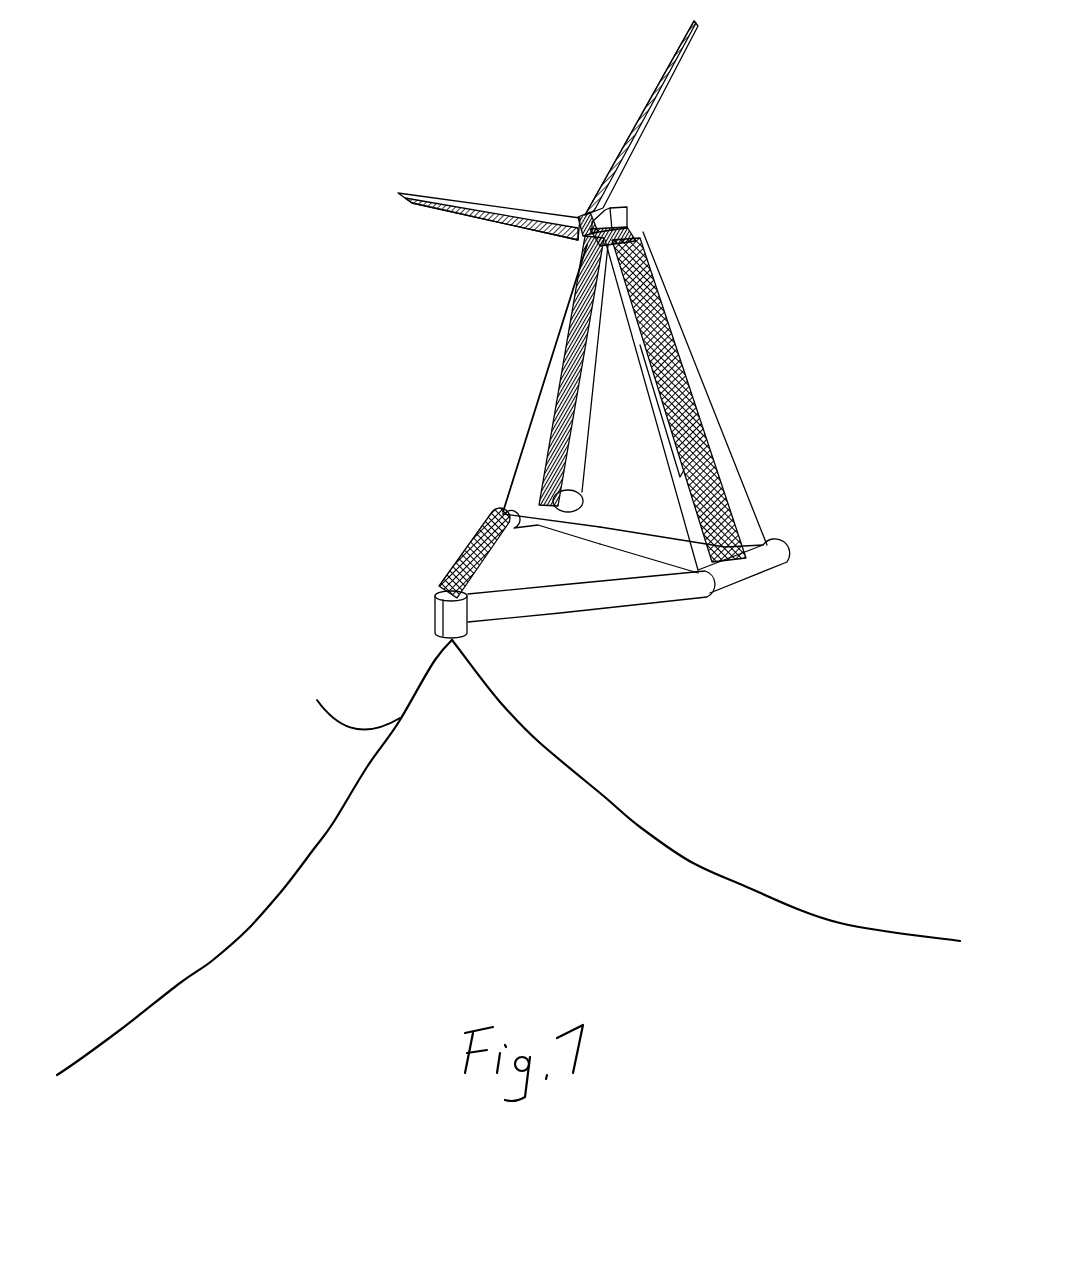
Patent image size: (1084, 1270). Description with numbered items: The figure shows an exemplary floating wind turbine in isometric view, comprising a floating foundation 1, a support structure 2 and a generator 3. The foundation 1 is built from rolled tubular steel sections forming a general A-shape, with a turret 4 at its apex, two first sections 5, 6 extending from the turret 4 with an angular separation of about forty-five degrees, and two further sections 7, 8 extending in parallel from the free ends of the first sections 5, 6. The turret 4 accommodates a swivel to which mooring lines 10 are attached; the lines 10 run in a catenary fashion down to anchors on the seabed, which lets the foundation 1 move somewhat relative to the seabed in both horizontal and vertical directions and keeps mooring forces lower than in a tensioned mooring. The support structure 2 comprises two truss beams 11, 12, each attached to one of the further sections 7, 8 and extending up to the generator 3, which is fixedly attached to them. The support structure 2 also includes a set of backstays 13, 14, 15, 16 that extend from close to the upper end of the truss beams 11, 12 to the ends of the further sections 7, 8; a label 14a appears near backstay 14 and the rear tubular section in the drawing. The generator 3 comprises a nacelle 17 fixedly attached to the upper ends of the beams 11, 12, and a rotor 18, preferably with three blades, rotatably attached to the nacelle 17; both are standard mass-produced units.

The floating foundation 1 is at (595, 579).
The support structure 2 is at (707, 401).
The generator 3 is at (626, 206).
The turret 4 is at (436, 592).
The first section 5 is at (473, 532).
The first section 6 is at (570, 607).
The further section 7 is at (527, 523).
The further section 8 is at (755, 577).
The mooring lines 10 is at (340, 713).
The truss beam 11 is at (662, 335).
The truss beam 12 is at (578, 422).
The backstay 13 is at (523, 443).
The backstay 14 is at (583, 473).
The beam 14a is at (619, 522).
The backstay 15 is at (710, 412).
The backstay 16 is at (682, 523).
The nacelle 17 is at (608, 208).
The rotor 18 is at (500, 207).